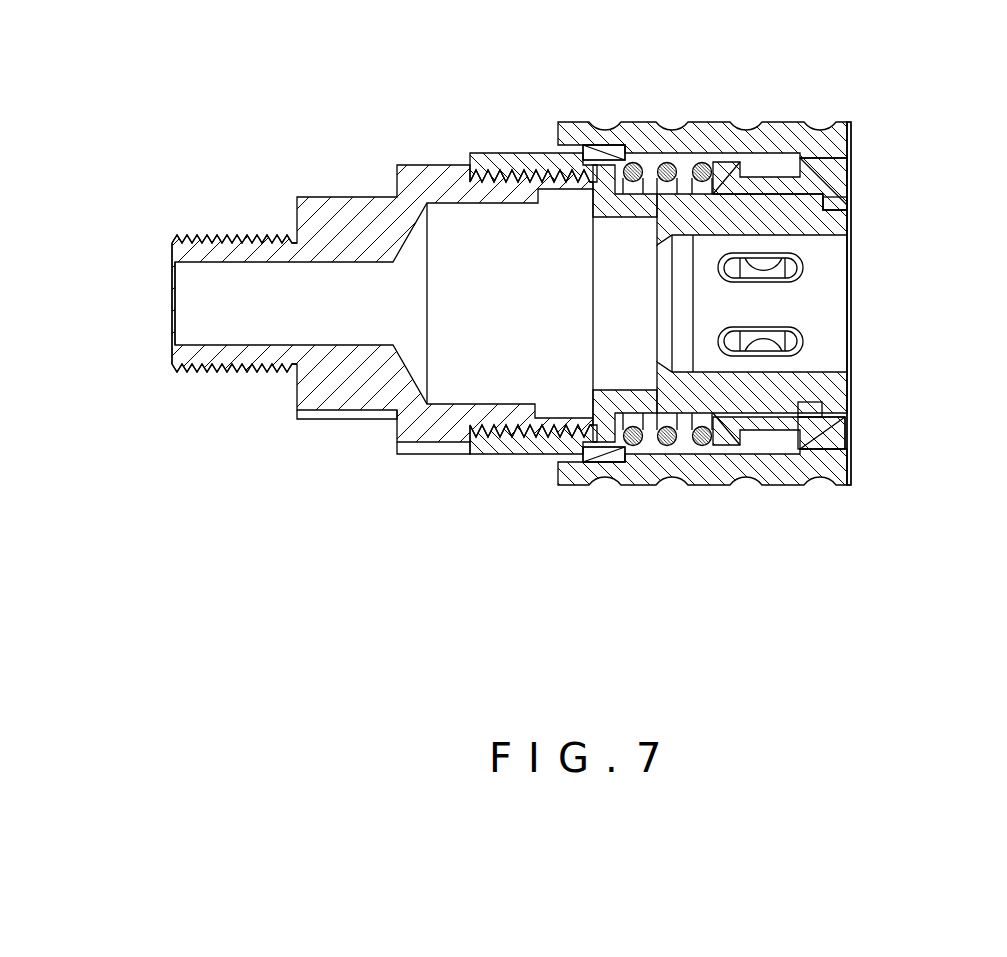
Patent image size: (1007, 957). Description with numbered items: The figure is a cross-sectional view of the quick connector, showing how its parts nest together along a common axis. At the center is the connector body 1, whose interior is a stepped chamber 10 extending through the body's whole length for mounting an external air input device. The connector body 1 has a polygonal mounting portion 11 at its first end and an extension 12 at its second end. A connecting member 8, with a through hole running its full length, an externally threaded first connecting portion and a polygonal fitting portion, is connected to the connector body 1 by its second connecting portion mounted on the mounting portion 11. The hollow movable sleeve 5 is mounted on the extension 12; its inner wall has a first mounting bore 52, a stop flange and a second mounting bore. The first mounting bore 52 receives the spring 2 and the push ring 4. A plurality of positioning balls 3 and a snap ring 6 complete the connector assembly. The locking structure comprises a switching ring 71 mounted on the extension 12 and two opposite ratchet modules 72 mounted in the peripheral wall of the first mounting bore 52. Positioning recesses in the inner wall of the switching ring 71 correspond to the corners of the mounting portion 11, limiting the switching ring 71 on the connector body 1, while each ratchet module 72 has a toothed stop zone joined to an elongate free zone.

The connector body 1 is at (490, 132).
The spring 2 is at (677, 156).
The positioning balls 3 is at (783, 345).
The push ring 4 is at (742, 152).
The movable sleeve 5 is at (858, 133).
The snap ring 6 is at (845, 440).
The connecting member 8 is at (282, 193).
The chamber 10 is at (828, 288).
The mounting portion 11 is at (545, 168).
The extension 12 is at (835, 218).
The first mounting bore 52 is at (666, 160).
The switching ring 71 is at (600, 145).
The ratchet modules 72 is at (597, 472).